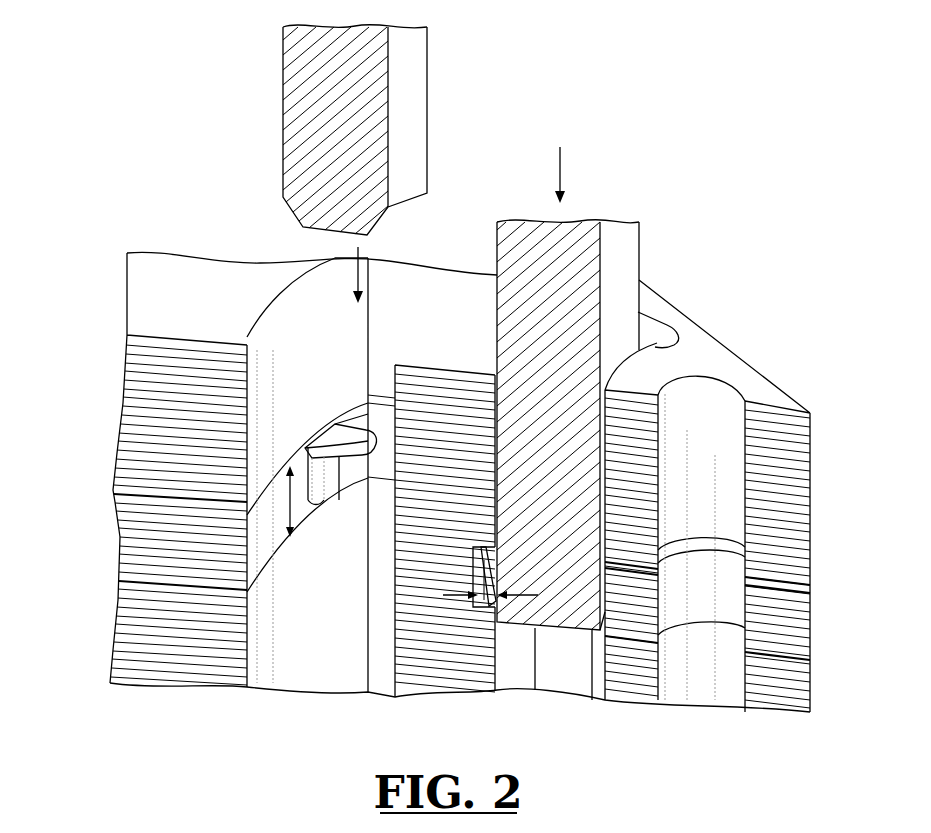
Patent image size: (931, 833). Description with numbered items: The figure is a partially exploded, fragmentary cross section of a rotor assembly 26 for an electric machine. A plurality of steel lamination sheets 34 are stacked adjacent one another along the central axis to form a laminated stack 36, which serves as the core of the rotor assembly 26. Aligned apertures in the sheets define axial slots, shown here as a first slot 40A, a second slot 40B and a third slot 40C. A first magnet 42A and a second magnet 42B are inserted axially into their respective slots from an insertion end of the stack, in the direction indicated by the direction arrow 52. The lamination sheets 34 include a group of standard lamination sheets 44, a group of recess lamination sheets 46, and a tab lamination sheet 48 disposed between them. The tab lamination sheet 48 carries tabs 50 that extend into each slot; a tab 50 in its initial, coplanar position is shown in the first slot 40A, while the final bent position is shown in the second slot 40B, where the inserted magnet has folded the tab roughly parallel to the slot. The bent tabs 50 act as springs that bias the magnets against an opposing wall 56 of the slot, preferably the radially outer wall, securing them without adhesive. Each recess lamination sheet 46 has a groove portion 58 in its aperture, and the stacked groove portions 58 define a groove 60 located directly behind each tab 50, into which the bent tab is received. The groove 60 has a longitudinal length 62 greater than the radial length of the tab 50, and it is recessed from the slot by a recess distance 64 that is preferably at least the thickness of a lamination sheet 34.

The rotor assembly 26 is at (820, 90).
The lamination sheets 34 is at (127, 408).
The laminated stack 36 is at (727, 338).
The first slot 40A is at (423, 324).
The second slot 40B is at (660, 347).
The third slot 40C is at (717, 385).
The first magnet 42A is at (412, 100).
The second magnet 42B is at (625, 257).
The group of standard lamination sheets 44 is at (108, 492).
The group of recess lamination sheets 46 is at (108, 502).
The tab lamination sheet 48 is at (112, 500).
The tab 50 is at (348, 437).
The direction arrow 52 is at (352, 276).
The wall 56 is at (395, 595).
The groove portion 58 is at (297, 503).
The groove 60 is at (322, 476).
The longitudinal length 62 is at (291, 538).
The recess distance 64 is at (500, 605).